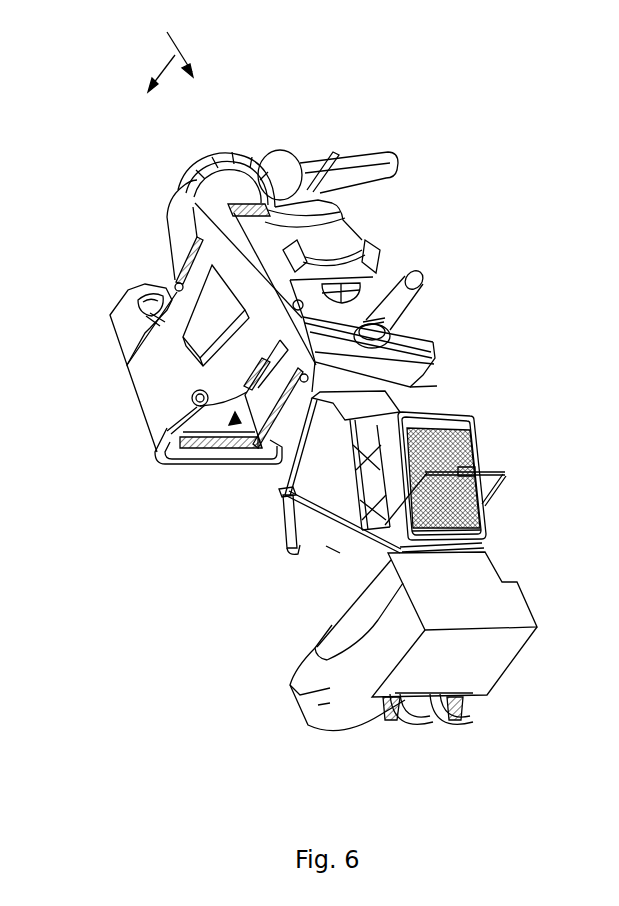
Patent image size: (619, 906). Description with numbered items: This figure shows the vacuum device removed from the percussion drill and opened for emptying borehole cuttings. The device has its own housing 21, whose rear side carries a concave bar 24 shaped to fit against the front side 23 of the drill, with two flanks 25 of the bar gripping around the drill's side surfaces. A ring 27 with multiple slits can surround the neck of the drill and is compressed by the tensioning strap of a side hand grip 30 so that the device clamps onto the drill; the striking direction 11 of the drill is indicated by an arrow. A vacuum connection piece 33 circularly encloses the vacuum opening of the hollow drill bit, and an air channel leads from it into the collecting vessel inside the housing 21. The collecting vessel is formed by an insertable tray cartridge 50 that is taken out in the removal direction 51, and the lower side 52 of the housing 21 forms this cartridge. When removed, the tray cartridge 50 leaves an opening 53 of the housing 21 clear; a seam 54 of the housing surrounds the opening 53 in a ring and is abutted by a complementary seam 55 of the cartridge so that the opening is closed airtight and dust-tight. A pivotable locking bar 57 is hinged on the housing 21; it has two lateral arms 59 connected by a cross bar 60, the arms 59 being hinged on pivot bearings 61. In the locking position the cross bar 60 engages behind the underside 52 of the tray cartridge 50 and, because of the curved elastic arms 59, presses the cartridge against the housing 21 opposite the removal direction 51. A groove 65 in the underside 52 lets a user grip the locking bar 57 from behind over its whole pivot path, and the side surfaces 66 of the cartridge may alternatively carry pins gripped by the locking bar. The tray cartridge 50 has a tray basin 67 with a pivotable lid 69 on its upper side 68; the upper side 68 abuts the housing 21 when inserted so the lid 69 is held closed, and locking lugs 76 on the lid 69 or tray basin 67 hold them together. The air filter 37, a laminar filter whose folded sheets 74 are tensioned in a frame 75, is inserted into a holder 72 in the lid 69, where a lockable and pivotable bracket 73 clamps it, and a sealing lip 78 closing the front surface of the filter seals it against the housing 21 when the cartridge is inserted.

The striking direction 11 is at (172, 60).
The removal direction 51 is at (178, 43).
The ring 27 is at (200, 178).
The side hand grip 30 is at (370, 167).
The front side 23 is at (327, 242).
The concave bar 24 is at (347, 253).
The flanks 25 is at (378, 262).
The vacuum connection piece 33 is at (112, 314).
The housing 21 is at (163, 382).
The pivot bearings 61 is at (192, 406).
The pivotable locking bar 57 is at (147, 482).
The lateral arms 59 is at (165, 430).
The cross bar 60 is at (204, 462).
The opening 53 is at (200, 462).
The seam 54 is at (235, 425).
The seam 55 is at (283, 491).
The pivotable lid 69 is at (288, 522).
The locking lugs 76 is at (291, 552).
The air filter 37 is at (332, 552).
The holder 72 is at (388, 409).
The folded sheets 74 is at (443, 457).
The frame 75 is at (475, 462).
The lockable and pivotable bracket 73 is at (497, 471).
The sealing lip 78 is at (490, 526).
The tray cartridge 50 is at (306, 678).
The upper side 68 is at (302, 670).
The tray basin 67 is at (320, 678).
The side surfaces 66 is at (330, 703).
The groove 65 is at (407, 722).
The lower side 52 is at (448, 673).